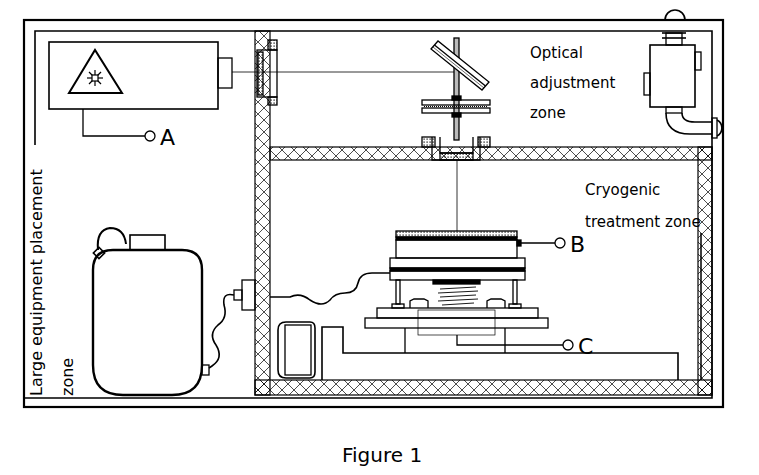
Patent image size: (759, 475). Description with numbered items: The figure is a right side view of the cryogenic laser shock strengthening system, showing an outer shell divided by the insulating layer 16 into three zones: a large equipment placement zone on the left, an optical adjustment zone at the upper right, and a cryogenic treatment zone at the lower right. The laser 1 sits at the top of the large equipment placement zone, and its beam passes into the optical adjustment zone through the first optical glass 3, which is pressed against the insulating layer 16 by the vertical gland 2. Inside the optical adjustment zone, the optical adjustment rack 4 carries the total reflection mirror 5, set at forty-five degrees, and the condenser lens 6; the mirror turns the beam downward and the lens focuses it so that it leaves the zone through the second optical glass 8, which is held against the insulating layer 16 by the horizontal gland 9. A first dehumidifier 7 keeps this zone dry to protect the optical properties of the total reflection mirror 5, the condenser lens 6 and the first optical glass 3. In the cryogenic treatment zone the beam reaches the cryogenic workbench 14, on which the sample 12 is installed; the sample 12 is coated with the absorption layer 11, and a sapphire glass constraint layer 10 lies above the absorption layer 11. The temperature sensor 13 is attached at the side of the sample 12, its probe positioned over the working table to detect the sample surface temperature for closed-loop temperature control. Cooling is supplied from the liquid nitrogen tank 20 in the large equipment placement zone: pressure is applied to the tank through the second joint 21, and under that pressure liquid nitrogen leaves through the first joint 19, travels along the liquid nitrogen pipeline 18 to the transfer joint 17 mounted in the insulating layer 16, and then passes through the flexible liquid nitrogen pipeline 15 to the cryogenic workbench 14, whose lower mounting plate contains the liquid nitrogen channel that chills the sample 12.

The laser 1 is at (132, 42).
The vertical gland 2 is at (278, 52).
The first optical glass 3 is at (278, 95).
The optical adjustment rack 4 is at (460, 40).
The total reflection mirror 5 is at (486, 84).
The condenser lens 6 is at (515, 120).
The first dehumidifier 7 is at (652, 64).
The second optical glass 8 is at (468, 162).
The horizontal gland 9 is at (445, 162).
The constraint layer 10 is at (400, 231).
The absorption layer 11 is at (398, 245).
The sample 12 is at (393, 261).
The temperature sensor 13 is at (542, 230).
The cryogenic workbench 14 is at (520, 285).
The flexible liquid nitrogen pipeline 15 is at (370, 306).
The insulating layer 16 is at (270, 222).
The transfer joint 17 is at (244, 283).
The liquid nitrogen pipeline 18 is at (212, 342).
The first joint 19 is at (210, 375).
The liquid nitrogen tank 20 is at (93, 325).
The second joint 21 is at (100, 260).